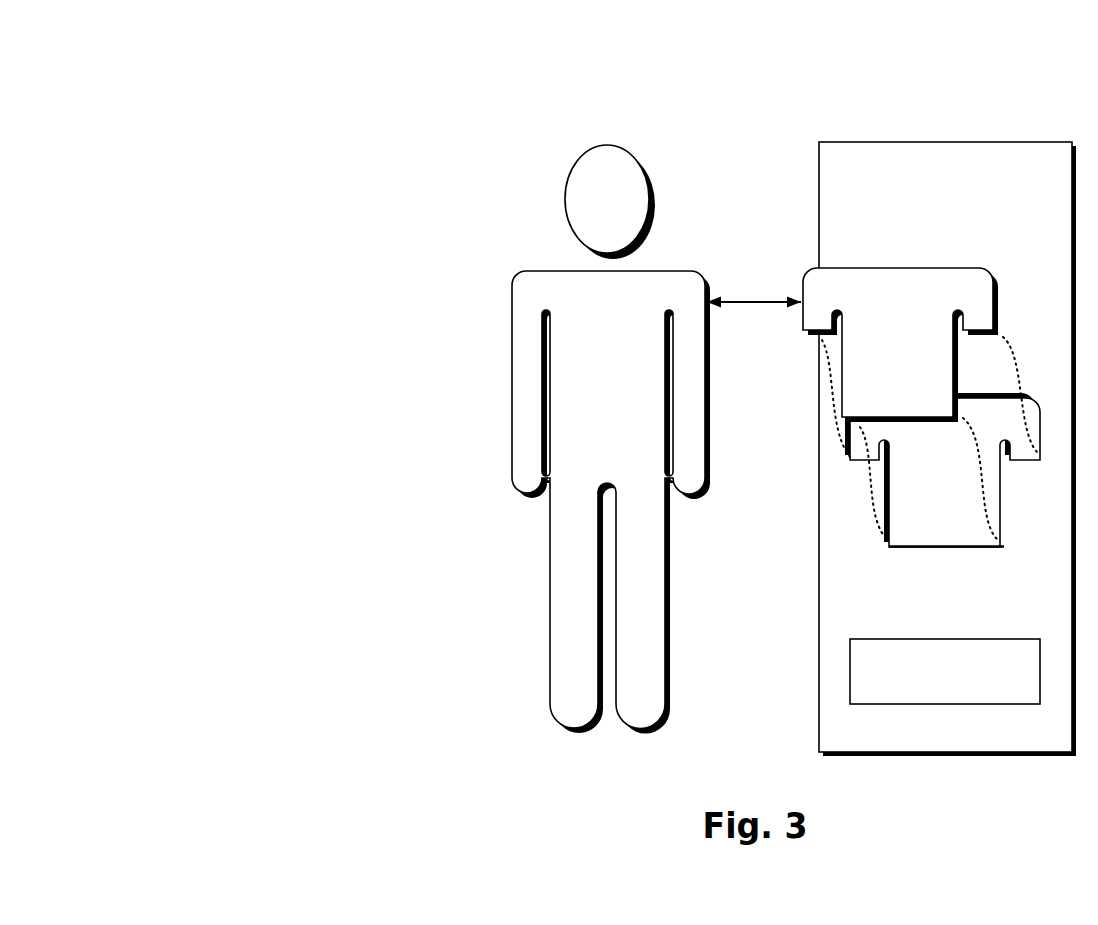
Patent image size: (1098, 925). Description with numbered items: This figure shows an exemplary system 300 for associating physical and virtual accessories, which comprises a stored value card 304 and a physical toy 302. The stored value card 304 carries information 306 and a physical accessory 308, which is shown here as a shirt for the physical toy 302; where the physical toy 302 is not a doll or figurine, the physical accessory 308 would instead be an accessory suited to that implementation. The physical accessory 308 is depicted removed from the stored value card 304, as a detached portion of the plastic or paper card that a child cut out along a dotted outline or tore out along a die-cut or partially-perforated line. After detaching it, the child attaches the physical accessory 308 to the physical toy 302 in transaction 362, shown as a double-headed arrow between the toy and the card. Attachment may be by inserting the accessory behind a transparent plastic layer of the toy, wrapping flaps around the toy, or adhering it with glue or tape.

The system 300 is at (218, 84).
The physical toy 302 is at (595, 354).
The stored value card 304 is at (929, 198).
The information 306 is at (929, 696).
The physical accessory 308 is at (882, 350).
The transaction 362 is at (742, 300).